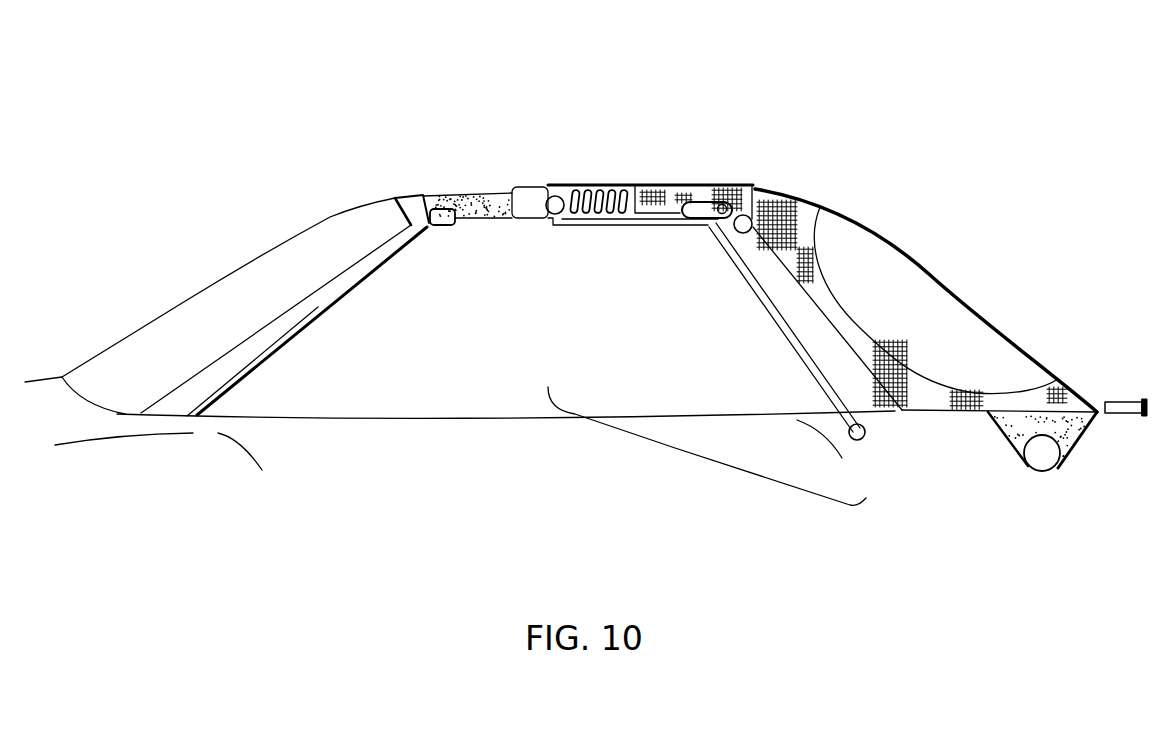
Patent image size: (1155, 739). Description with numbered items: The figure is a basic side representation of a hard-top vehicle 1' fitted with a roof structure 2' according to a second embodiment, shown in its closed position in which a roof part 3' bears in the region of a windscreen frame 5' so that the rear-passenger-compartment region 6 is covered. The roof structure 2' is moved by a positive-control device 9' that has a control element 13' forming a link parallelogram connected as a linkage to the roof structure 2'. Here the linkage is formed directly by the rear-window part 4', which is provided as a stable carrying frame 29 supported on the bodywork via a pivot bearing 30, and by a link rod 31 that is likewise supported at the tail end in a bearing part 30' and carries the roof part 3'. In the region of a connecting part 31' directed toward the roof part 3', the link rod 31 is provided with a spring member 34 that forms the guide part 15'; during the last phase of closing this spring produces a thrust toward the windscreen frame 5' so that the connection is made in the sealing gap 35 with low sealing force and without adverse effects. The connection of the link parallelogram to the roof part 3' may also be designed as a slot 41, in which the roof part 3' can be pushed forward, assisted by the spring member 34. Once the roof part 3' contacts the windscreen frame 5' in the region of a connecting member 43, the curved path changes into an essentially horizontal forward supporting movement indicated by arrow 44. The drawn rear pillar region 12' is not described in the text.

The hard-top vehicle 1' is at (460, 284).
The roof structure 2' is at (943, 213).
The roof part 3' is at (693, 167).
The rear-window part 4' is at (926, 290).
The windscreen frame 5' is at (285, 264).
The rear-passenger-compartment region 6 is at (475, 389).
The positive-control device 9' is at (707, 447).
The rear pillar 12' is at (827, 269).
The control element 13' is at (629, 327).
The guide part 15' is at (618, 102).
The carrying frame 29 is at (833, 298).
The pivot bearing 30 is at (1067, 470).
The bearing part 30' is at (889, 454).
The link rod 31 is at (784, 323).
The connecting part 31' is at (538, 172).
The spring member 34 is at (628, 182).
The sealing gap 35 is at (432, 203).
The slot 41 is at (528, 213).
The connecting member 43 is at (460, 194).
The arrow 44 is at (432, 245).